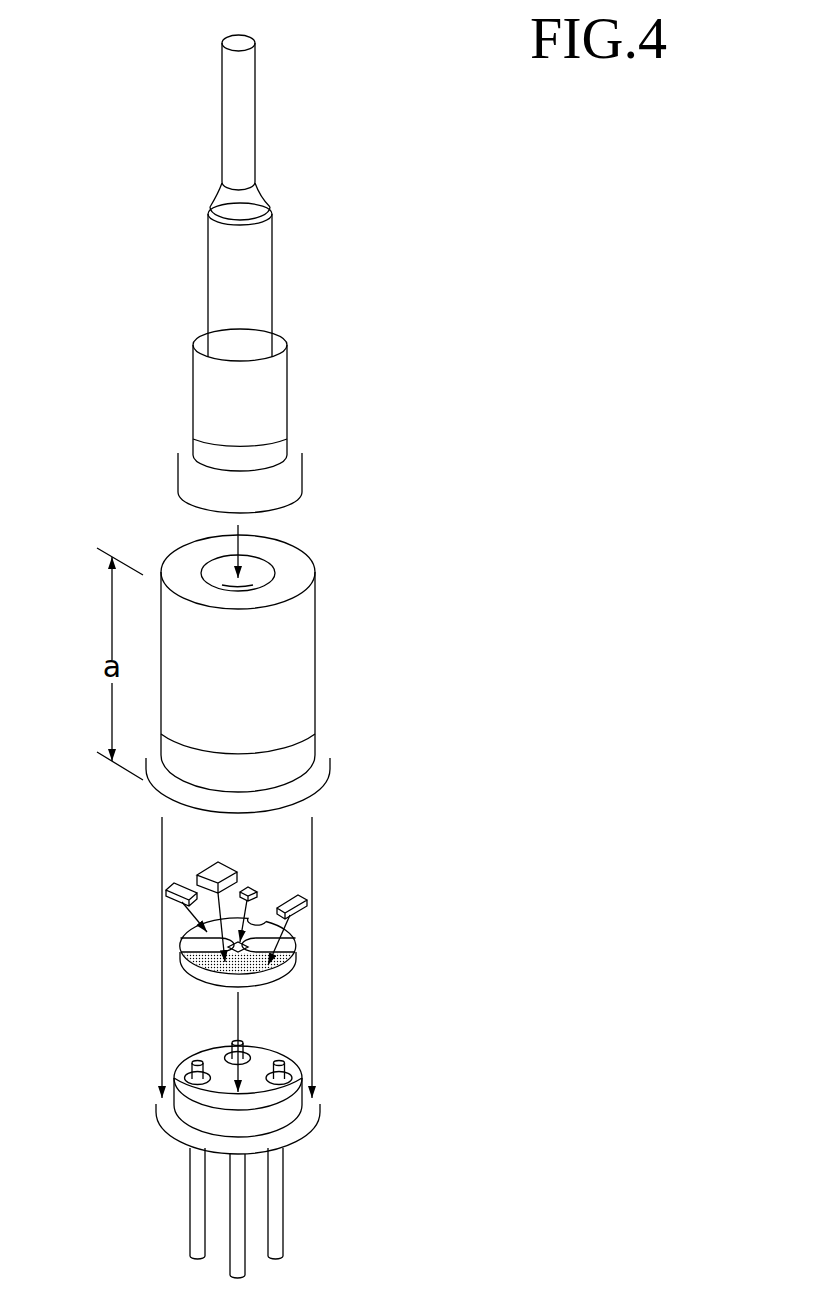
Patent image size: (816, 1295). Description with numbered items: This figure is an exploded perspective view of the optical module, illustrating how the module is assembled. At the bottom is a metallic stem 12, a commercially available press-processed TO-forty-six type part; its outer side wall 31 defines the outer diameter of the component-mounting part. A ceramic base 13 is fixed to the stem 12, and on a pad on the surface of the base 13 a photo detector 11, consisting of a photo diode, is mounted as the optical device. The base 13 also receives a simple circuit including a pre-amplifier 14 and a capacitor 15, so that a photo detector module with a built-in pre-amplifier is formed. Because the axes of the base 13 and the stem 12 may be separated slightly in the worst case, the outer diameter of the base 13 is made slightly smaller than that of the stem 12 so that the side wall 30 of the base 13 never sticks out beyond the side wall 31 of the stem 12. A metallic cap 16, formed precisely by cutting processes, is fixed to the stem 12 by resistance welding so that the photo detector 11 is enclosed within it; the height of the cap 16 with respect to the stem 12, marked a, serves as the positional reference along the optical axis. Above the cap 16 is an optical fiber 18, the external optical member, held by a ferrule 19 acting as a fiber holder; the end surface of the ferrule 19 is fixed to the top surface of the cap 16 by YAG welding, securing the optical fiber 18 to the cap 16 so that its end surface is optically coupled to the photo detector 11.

The photo detector 11 is at (260, 888).
The stem 12 is at (297, 1068).
The base 13 is at (298, 937).
The pre-amplifier 14 is at (193, 867).
The capacitor 15 is at (160, 880).
The cap 16 is at (317, 657).
The optical fiber 18 is at (249, 131).
The ferrule 19 is at (292, 380).
The side wall of the base 30 is at (290, 973).
The side wall of the stem 31 is at (275, 1120).